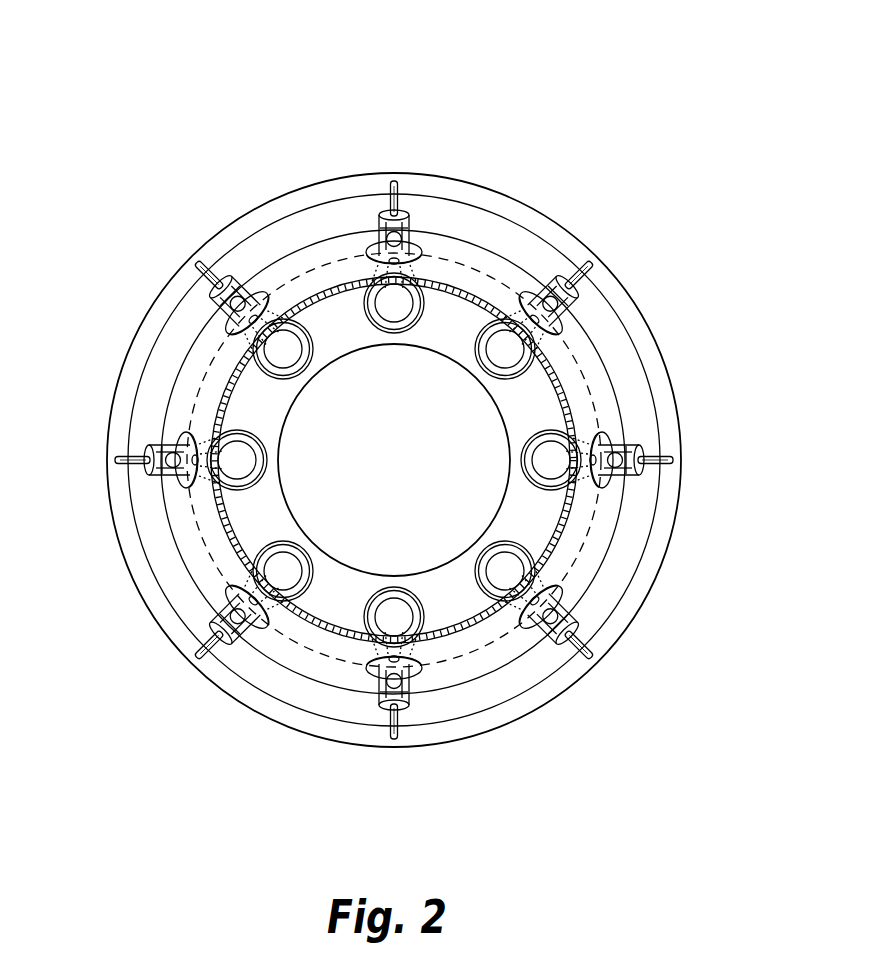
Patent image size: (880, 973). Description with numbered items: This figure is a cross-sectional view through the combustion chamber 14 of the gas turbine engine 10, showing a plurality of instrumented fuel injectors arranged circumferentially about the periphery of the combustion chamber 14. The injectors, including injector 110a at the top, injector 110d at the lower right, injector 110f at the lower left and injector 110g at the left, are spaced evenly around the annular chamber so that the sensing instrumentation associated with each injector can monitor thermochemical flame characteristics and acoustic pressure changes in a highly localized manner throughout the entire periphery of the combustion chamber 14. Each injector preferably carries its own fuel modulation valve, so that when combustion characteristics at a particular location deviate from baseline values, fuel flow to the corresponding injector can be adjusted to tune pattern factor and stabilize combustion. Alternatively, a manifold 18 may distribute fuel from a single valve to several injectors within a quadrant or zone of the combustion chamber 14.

The gas turbine engine 10 is at (183, 97).
The combustion chamber 14 is at (470, 268).
The manifold 18 is at (143, 353).
The instrumented fuel injector 110a is at (422, 215).
The instrumented fuel injector 110d is at (563, 608).
The instrumented fuel injector 110f is at (218, 612).
The instrumented fuel injector 110g is at (183, 460).